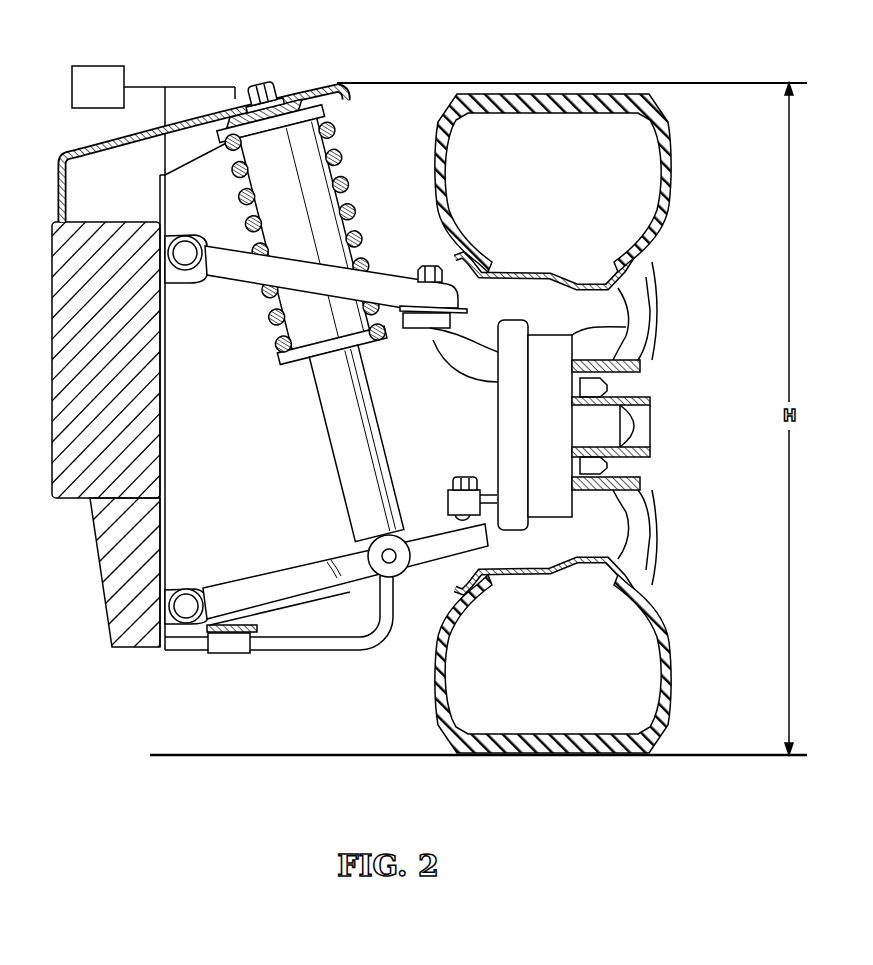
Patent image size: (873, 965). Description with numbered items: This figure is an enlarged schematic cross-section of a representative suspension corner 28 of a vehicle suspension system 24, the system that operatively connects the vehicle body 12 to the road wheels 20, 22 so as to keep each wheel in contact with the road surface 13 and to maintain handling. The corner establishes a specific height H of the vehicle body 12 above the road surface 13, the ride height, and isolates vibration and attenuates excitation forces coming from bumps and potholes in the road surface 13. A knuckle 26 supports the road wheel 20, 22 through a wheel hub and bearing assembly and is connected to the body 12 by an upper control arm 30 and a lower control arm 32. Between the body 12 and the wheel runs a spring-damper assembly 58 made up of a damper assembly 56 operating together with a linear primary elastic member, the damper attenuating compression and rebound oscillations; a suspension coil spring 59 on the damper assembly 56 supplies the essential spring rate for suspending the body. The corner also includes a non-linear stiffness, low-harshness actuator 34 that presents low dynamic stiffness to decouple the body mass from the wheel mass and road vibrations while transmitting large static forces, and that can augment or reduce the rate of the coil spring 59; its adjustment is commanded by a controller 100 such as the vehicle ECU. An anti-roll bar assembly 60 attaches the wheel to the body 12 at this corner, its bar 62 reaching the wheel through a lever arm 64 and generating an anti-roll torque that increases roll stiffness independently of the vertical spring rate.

The body 12 is at (331, 82).
The road surface 13 is at (486, 764).
The front wheels 20 is at (570, 423).
The rear wheels 22 is at (668, 647).
The vehicle suspension system 24 is at (158, 660).
The knuckle 26 is at (650, 325).
The suspension corner 28 is at (456, 67).
The upper control arm 30 is at (228, 263).
The lower control arm 32 is at (283, 580).
The non-linear stiffness, low-harshness actuator 34 is at (289, 409).
The damper assembly 56 is at (313, 180).
The spring-damper assembly 58 is at (330, 309).
The suspension coil spring 59 is at (344, 199).
The anti-roll bar assembly 60 is at (297, 638).
The anti-roll bar 62 is at (297, 638).
The lever arm 64 is at (391, 594).
The controller 100 is at (84, 97).